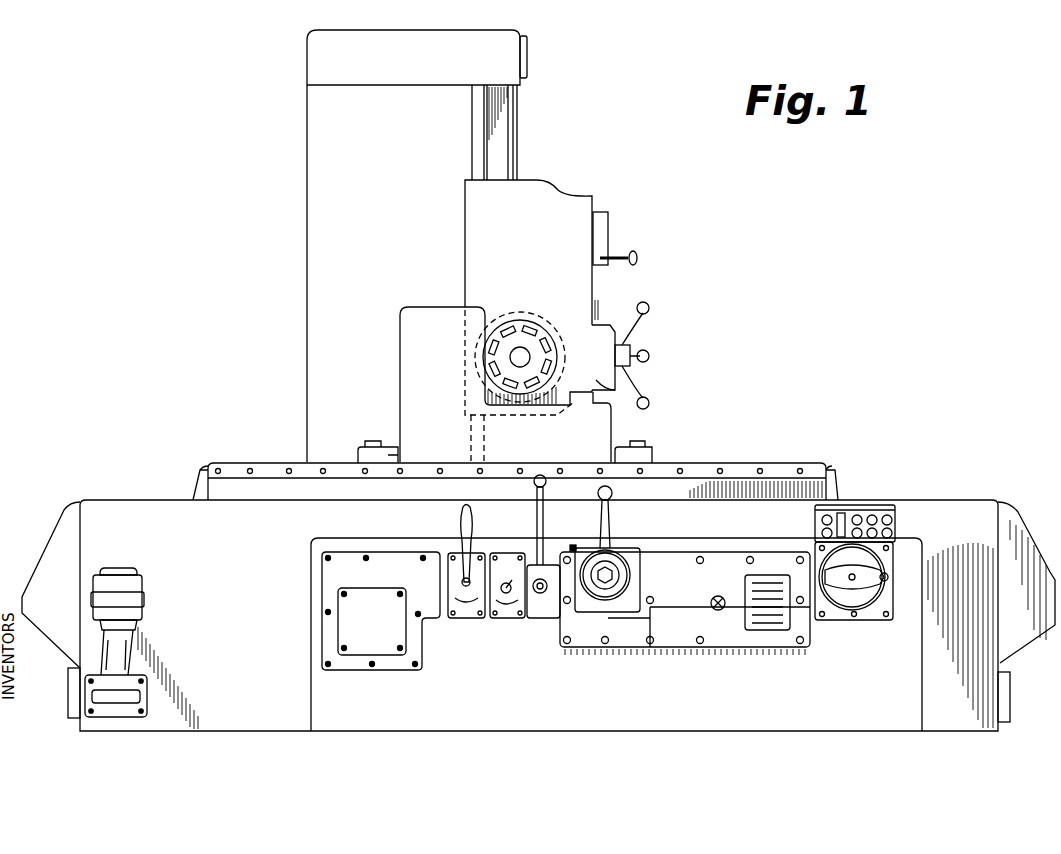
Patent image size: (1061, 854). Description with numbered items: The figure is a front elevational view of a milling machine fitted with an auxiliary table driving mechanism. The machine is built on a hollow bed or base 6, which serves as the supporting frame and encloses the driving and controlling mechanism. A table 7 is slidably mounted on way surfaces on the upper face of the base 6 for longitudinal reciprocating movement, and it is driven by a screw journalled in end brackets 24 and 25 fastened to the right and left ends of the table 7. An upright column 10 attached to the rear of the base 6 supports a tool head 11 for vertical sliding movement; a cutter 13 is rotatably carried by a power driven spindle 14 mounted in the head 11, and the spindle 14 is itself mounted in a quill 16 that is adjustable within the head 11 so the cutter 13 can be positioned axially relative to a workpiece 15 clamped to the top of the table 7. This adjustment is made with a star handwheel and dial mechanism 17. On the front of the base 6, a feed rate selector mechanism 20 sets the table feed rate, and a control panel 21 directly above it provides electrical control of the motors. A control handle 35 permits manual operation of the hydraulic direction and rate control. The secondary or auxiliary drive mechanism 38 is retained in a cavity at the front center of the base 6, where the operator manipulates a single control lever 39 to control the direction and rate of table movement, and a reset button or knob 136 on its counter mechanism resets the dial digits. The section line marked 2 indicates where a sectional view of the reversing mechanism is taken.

The upright column 10 is at (318, 207).
The tool head 11 is at (567, 204).
The cutter 13 is at (531, 336).
The power driven spindle 14 is at (477, 380).
The workpiece 15 is at (412, 364).
The quill 16 is at (508, 313).
The star handwheel and dial mechanism 17 is at (628, 347).
The end bracket 25 is at (198, 470).
The table 7 is at (737, 490).
The end bracket 24 is at (833, 470).
The control panel 21 is at (852, 512).
The bed or base 6 is at (930, 513).
The control handle 35 is at (537, 511).
The reset button or knob 136 is at (577, 543).
The section line 2- 2 is at (559, 541).
The control lever 39 is at (615, 524).
The feed rate selector mechanism 20 is at (865, 607).
The secondary or auxiliary drive mechanism 38 is at (603, 657).